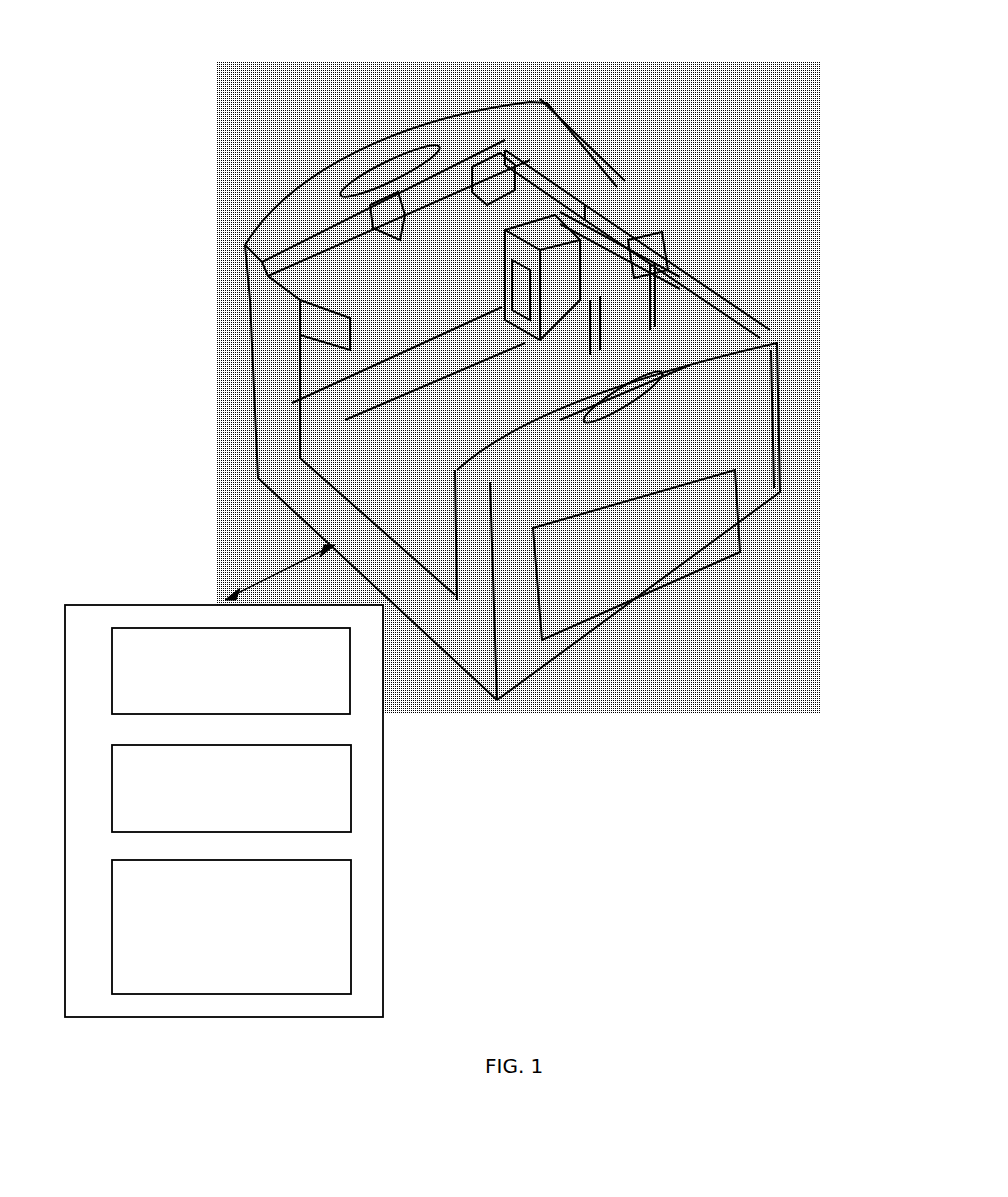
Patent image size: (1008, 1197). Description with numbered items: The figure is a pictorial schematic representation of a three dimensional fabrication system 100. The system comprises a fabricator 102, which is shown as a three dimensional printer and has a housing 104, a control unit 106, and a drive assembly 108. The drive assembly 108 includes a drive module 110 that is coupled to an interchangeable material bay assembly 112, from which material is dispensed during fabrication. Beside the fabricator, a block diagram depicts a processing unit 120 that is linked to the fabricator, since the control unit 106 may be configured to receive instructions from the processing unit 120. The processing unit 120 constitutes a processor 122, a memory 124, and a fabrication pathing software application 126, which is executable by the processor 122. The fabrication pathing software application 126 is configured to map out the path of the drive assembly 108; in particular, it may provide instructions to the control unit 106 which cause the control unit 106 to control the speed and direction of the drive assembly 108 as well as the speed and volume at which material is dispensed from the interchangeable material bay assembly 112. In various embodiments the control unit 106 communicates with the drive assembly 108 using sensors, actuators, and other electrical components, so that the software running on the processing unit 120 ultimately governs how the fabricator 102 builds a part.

The three dimensional fabrication system 100 is at (528, 359).
The fabricator 102 is at (557, 352).
The housing 104 is at (752, 458).
The control unit 106 is at (474, 167).
The drive assembly 108 is at (583, 165).
The drive module 110 is at (612, 225).
The interchangeable material bay assembly 112 is at (505, 325).
The processing unit 120 is at (222, 787).
The processor 122 is at (231, 671).
The memory 124 is at (231, 788).
The fabrication pathing software application 126 is at (231, 927).